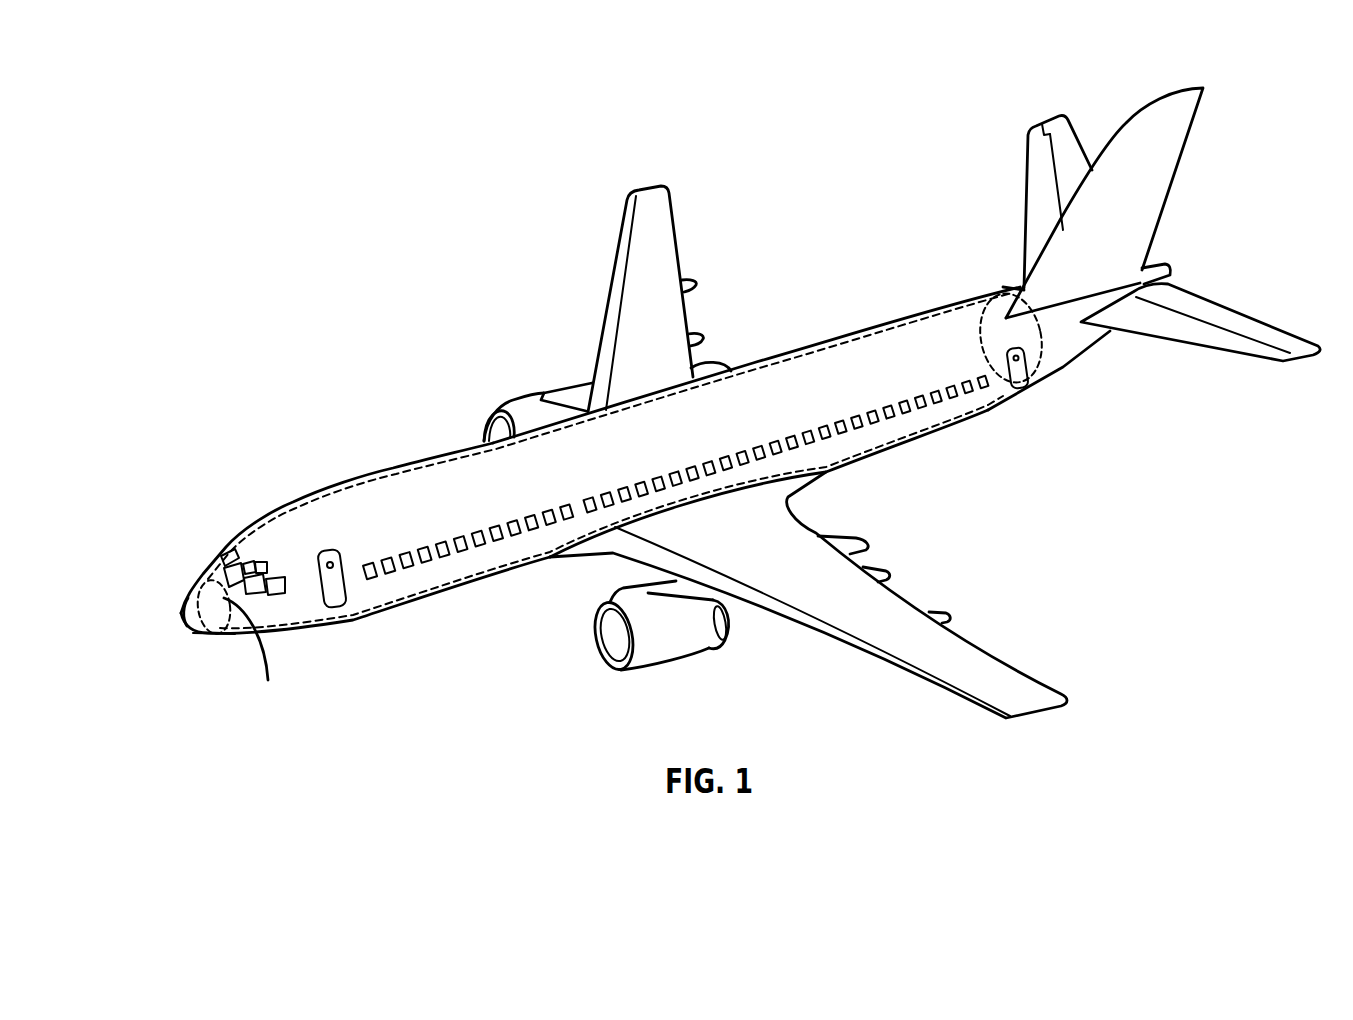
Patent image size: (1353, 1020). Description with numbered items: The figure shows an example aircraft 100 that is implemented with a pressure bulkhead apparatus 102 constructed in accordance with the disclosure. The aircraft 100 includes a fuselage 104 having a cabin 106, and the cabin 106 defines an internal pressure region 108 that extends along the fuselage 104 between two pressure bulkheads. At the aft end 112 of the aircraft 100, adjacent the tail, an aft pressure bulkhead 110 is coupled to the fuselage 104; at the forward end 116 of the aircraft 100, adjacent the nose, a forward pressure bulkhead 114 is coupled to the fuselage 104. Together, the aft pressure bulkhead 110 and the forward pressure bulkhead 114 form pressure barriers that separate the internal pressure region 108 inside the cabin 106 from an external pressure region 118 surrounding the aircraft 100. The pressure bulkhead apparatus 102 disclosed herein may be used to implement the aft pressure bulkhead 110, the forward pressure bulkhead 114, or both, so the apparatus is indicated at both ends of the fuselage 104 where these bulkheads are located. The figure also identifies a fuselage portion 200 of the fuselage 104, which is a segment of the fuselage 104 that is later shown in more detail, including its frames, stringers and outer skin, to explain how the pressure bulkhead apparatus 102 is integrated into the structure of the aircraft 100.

The aircraft 100 is at (450, 163).
The pressure bulkhead apparatus 102 is at (991, 262).
The fuselage 104 is at (361, 481).
The cabin 106 is at (774, 357).
The internal pressure region 108 is at (604, 466).
The aft pressure bulkhead 110 is at (1035, 350).
The aft end 112 is at (1148, 262).
The forward pressure bulkhead 114 is at (265, 680).
The forward end 116 is at (181, 622).
The external pressure region 118 is at (191, 651).
The fuselage portion 200 is at (861, 300).